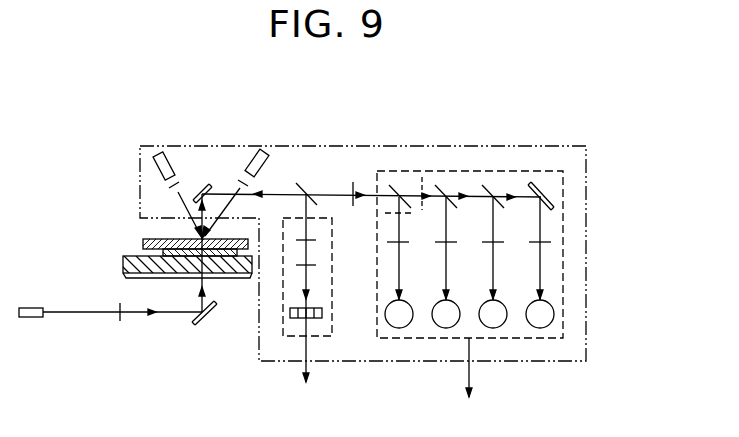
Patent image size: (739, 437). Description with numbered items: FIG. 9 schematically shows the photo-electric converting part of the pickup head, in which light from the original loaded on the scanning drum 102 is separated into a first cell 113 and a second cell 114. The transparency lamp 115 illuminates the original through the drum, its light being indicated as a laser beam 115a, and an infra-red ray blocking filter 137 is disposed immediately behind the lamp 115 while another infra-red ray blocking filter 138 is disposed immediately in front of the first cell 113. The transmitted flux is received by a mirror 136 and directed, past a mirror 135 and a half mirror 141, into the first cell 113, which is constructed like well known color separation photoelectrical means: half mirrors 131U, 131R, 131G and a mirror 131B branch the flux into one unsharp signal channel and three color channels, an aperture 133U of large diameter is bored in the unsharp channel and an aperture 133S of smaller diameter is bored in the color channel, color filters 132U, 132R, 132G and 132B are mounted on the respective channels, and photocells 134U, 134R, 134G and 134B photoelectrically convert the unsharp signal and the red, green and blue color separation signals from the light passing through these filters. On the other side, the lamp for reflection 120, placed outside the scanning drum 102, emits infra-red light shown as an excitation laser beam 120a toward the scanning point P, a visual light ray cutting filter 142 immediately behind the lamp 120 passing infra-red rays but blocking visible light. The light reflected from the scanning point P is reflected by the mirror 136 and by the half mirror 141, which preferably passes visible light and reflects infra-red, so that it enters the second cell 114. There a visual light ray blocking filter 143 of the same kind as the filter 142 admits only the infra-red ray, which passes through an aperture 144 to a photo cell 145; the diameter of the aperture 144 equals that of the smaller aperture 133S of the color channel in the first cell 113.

The scanning drum 102 is at (122, 262).
The scanning point P is at (200, 238).
The first cell 113 is at (566, 196).
The second cell 114 is at (333, 214).
The transparency lamp 115 is at (31, 320).
The laser beam 115a is at (152, 315).
The lamp for reflection 120 is at (158, 152).
The excitation laser beam 120a is at (175, 192).
The half mirror 131U is at (394, 185).
The half mirror 131R is at (440, 183).
The half mirror 131G is at (487, 184).
The mirror 131B is at (533, 183).
The color filter 132U is at (387, 242).
The color filter 132R is at (457, 243).
The color filter 132G is at (502, 243).
The color filter 132B is at (552, 242).
The aperture 133S is at (422, 178).
The aperture 133U is at (412, 214).
The photocell 134U is at (398, 328).
The photocell 134R is at (446, 328).
The photocell 134G is at (493, 328).
The photocell 134B is at (540, 328).
The mirror 135 is at (203, 325).
The mirror 136 is at (203, 186).
The infra-red ray blocking filter 137 is at (120, 321).
The infra-red ray blocking filter 138 is at (354, 183).
The half mirror 141 is at (300, 184).
The visual light ray cutting filter 142 is at (172, 184).
The visual light ray blocking filter 143 is at (316, 241).
The aperture 144 is at (316, 266).
The photo cell 145 is at (318, 318).